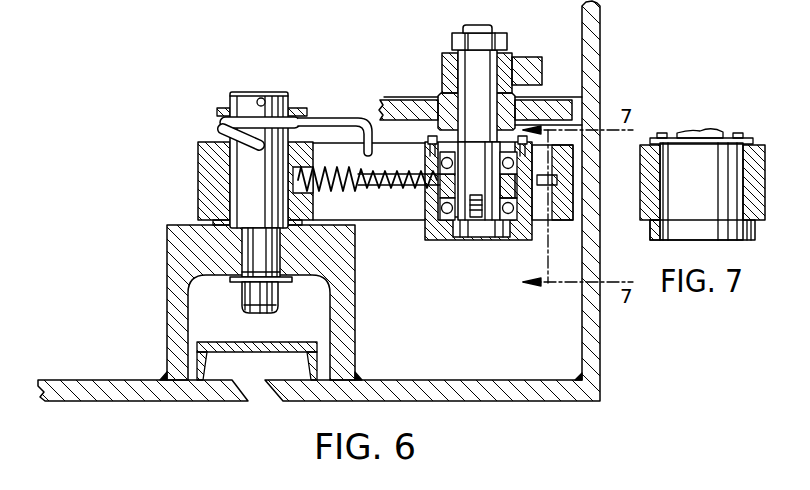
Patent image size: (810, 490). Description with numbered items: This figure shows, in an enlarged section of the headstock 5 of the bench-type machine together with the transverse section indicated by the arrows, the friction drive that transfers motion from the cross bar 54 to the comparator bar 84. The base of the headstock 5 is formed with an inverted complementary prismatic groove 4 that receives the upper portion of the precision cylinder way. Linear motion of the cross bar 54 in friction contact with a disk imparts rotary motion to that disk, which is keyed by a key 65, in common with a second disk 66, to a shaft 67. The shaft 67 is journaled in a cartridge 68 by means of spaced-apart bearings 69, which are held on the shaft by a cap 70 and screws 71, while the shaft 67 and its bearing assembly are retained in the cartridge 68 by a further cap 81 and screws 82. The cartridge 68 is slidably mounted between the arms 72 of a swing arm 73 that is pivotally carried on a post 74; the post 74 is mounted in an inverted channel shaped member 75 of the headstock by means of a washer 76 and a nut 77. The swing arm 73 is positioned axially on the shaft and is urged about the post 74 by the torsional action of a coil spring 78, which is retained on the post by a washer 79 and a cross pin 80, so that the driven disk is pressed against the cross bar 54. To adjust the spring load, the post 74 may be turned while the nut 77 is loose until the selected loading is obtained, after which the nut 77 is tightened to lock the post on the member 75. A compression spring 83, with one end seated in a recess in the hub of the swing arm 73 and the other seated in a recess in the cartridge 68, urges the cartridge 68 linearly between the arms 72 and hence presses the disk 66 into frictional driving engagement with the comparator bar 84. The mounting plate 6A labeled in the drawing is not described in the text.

In FIG. 6, the inverted complementary prismatic groove 4 is at (233, 388).
In FIG. 6, the headstock 5 is at (553, 401).
In FIG. 6, the mounting plate 6A is at (388, 97).
In FIG. 6, the cross bar 54 is at (381, 99).
In FIG. 6, the key 65 is at (463, 89).
In FIG. 6, the disk 66 is at (448, 54).
In FIG. 6, the shaft 67 is at (486, 24).
In FIG. 6, the cartridge 68 is at (427, 240).
In FIG. 7, the cartridge 68 is at (712, 240).
In FIG. 6, the bearings 69 is at (513, 165).
In FIG. 6, the cap 70 is at (508, 215).
In FIG. 6, the screws 71 is at (477, 237).
In FIG. 7, the arms 72 is at (641, 194).
In FIG. 6, the swing arm 73 is at (198, 178).
In FIG. 6, the post 74 is at (230, 97).
In FIG. 6, the inverted channel shaped member 75 is at (167, 322).
In FIG. 6, the washer 76 is at (290, 282).
In FIG. 6, the nut 77 is at (279, 306).
In FIG. 6, the coil spring 78 is at (343, 118).
In FIG. 6, the washer 79 is at (311, 96).
In FIG. 6, the cross pin 80 is at (258, 99).
In FIG. 6, the cap 81 is at (443, 112).
In FIG. 6, the screws 82 is at (430, 136).
In FIG. 6, the compression spring 83 is at (412, 191).
In FIG. 6, the comparator bar 84 is at (517, 58).